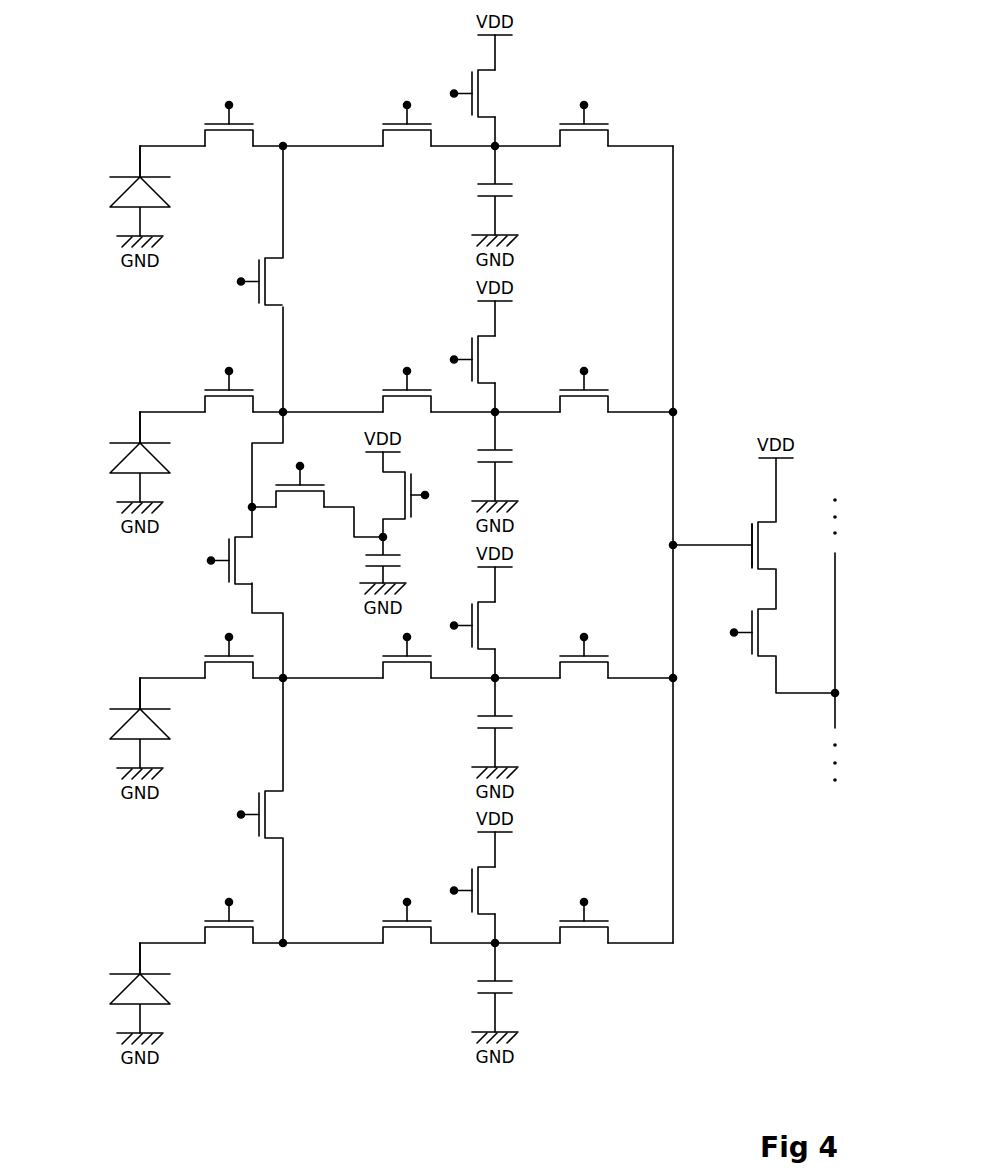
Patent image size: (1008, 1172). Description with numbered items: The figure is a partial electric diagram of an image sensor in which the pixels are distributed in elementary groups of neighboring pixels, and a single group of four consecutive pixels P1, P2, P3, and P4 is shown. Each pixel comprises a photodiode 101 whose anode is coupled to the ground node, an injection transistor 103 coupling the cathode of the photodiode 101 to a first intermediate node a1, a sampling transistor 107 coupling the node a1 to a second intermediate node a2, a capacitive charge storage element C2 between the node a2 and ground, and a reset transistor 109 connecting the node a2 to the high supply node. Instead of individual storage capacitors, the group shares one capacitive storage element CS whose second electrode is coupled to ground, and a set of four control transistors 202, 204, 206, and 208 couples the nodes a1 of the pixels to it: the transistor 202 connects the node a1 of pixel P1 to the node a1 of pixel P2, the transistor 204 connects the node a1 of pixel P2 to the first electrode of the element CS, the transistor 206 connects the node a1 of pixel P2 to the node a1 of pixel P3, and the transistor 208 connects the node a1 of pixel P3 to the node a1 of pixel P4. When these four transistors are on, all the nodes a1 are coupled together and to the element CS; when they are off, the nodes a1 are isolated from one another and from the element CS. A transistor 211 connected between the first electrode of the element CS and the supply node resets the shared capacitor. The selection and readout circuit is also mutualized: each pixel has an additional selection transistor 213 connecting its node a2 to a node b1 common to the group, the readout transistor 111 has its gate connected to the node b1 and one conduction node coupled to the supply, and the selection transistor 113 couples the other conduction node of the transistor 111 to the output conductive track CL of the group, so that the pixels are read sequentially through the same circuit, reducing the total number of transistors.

The photodiode 101 is at (113, 198).
The injection transistor 103 is at (205, 123).
The sampling transistor 107 is at (386, 140).
The reset transistor 109 is at (481, 84).
The readout transistor 111 is at (760, 540).
The selection transistor 113 is at (760, 630).
The control transistor 202 is at (258, 303).
The control transistor 204 is at (318, 482).
The control transistor 206 is at (231, 577).
The control transistor 208 is at (258, 834).
The reset transistor for shared capacitive element 211 is at (411, 505).
The additional selection transistor 213 is at (598, 122).
The capacitive charge storage element C2 is at (512, 199).
The capacitive storage element CS is at (365, 567).
The output conductive track CL is at (836, 628).
The pixel P1 is at (116, 157).
The pixel P2 is at (116, 423).
The pixel P3 is at (116, 689).
The pixel P4 is at (116, 954).
The first intermediate node a1 is at (281, 149).
The second intermediate node a2 is at (493, 149).
The common node b1 is at (678, 543).